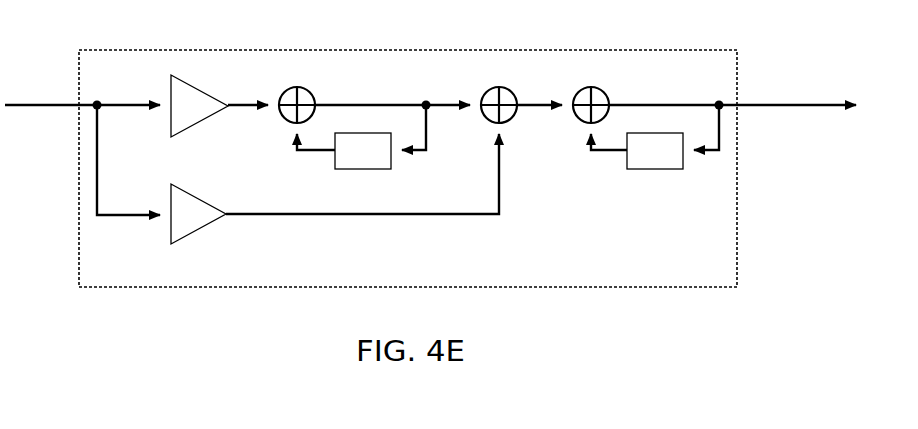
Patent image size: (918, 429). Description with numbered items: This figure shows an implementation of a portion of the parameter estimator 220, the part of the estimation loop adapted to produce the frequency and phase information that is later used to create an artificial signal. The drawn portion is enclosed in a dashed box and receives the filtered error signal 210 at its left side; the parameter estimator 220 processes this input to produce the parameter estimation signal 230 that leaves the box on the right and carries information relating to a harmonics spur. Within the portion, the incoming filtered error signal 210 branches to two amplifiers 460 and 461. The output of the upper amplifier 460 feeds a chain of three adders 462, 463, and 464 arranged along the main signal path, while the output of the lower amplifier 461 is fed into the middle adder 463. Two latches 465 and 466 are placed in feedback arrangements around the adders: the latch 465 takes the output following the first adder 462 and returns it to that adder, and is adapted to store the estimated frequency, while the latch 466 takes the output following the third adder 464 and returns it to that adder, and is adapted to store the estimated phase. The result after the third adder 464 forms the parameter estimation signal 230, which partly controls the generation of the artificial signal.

The parameter estimator 220 is at (408, 153).
The filtered error signal 210 is at (82, 149).
The parameter estimation signal 230 is at (732, 96).
The amplifier 460 is at (199, 106).
The amplifier 461 is at (198, 214).
The adder 462 is at (298, 95).
The adder 463 is at (499, 95).
The adder 464 is at (591, 95).
The latch 465 is at (361, 137).
The latch 466 is at (655, 137).